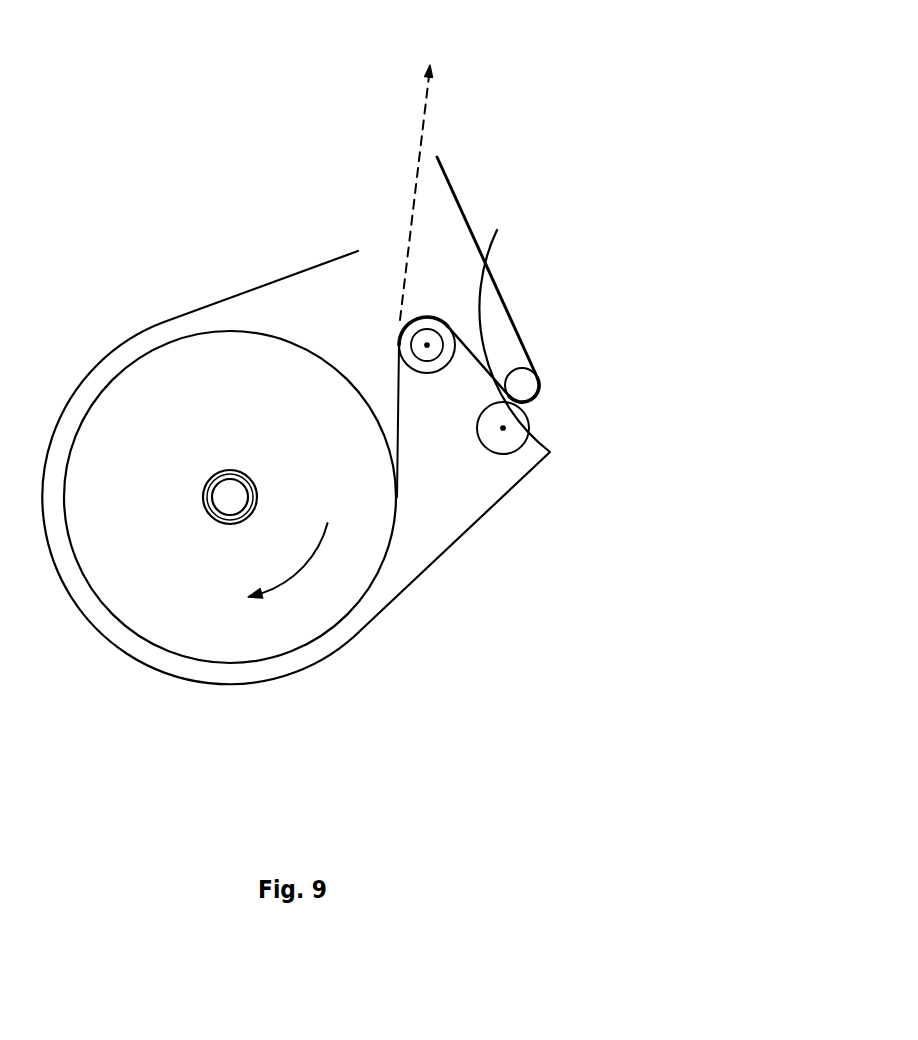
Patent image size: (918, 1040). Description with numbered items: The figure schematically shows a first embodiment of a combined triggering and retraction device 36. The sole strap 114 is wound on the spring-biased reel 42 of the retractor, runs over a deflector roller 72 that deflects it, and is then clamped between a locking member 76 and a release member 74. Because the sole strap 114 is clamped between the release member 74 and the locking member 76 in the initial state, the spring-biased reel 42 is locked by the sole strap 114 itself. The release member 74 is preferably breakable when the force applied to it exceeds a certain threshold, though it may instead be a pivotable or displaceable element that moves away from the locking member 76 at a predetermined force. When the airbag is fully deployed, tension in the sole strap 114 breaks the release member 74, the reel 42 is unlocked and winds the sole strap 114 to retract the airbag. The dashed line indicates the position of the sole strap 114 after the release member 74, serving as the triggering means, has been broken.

The combined triggering and retraction device 36 is at (137, 243).
The spring-biased reel 42 is at (187, 610).
The deflector roller 72 is at (435, 332).
The release member 74 is at (522, 387).
The locking member 76 is at (510, 442).
The sole strap 114 is at (450, 180).